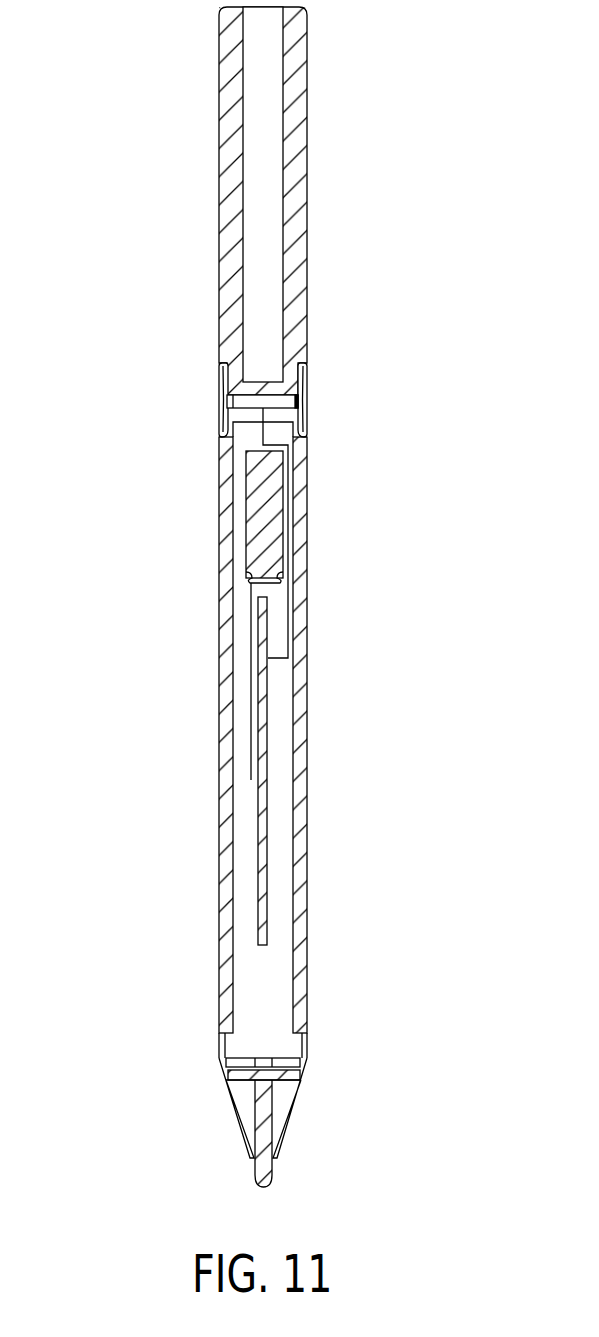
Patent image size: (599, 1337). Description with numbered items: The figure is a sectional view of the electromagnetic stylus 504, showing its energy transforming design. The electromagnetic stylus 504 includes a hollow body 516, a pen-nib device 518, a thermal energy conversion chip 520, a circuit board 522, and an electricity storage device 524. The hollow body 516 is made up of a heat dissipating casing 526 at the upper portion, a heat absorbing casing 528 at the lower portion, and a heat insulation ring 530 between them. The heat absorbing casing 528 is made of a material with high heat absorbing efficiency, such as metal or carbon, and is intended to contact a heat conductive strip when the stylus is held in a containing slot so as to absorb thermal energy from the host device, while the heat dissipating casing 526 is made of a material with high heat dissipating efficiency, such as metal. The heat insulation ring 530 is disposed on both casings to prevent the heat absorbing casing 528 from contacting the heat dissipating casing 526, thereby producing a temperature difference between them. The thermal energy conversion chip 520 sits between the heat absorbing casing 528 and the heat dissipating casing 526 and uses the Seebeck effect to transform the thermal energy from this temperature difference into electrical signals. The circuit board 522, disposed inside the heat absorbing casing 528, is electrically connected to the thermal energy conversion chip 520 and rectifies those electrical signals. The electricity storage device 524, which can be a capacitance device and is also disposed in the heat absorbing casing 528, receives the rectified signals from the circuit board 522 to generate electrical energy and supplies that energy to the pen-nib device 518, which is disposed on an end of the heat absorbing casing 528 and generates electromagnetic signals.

The electromagnetic stylus 504 is at (152, 62).
The hollow body 516 is at (387, 633).
The pen-nib device 518 is at (273, 1080).
The thermal energy conversion chip 520 is at (240, 405).
The circuit board 522 is at (262, 725).
The electricity storage device 524 is at (247, 523).
The heat dissipating casing 526 is at (300, 135).
The heat absorbing casing 528 is at (293, 608).
The heat insulation ring 530 is at (302, 380).